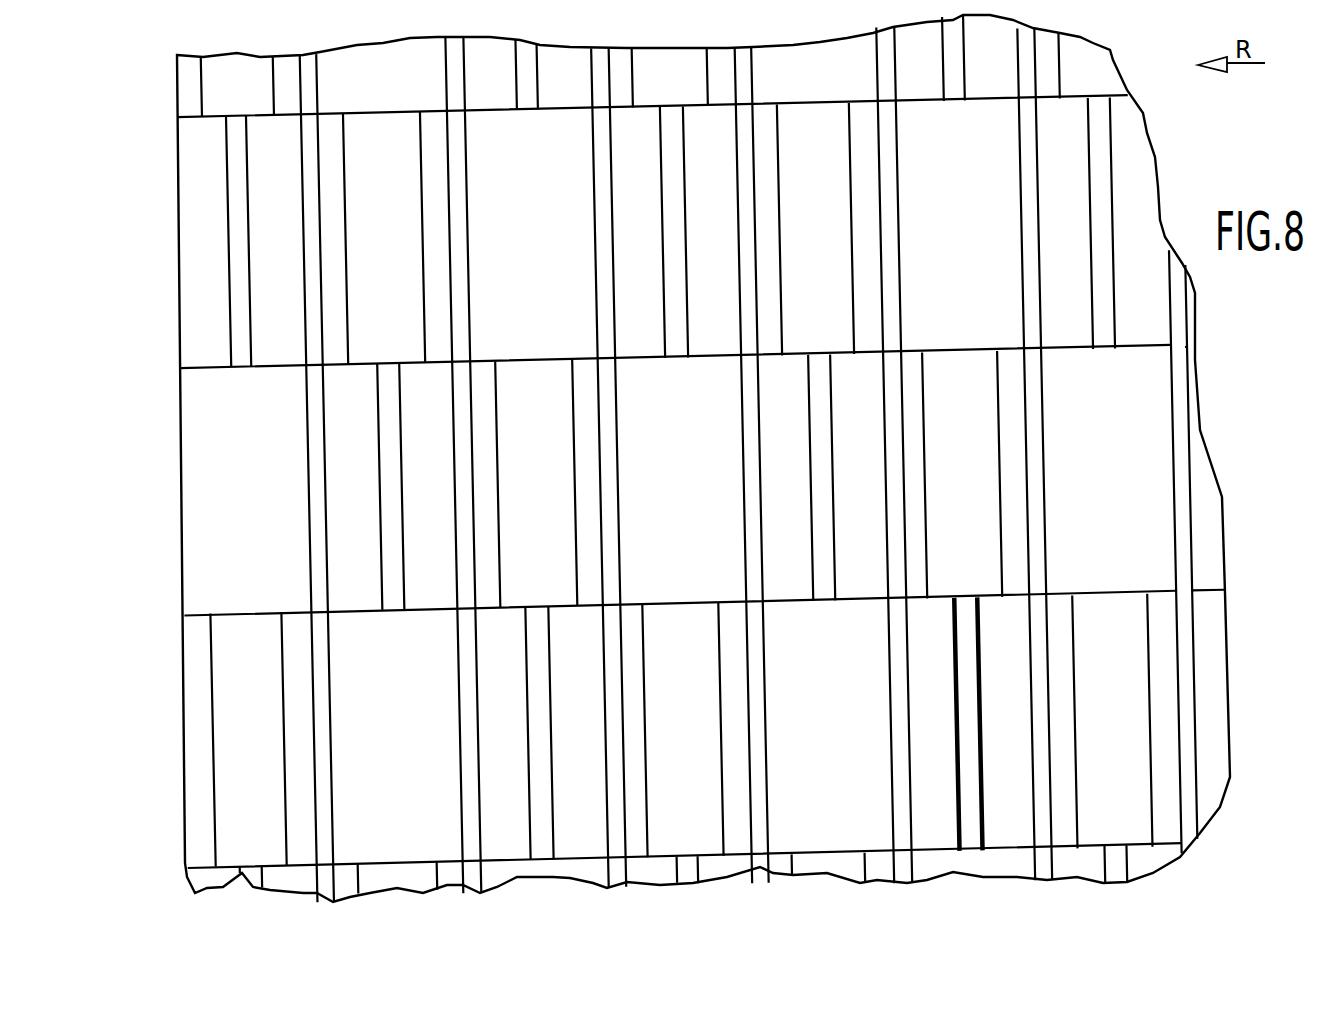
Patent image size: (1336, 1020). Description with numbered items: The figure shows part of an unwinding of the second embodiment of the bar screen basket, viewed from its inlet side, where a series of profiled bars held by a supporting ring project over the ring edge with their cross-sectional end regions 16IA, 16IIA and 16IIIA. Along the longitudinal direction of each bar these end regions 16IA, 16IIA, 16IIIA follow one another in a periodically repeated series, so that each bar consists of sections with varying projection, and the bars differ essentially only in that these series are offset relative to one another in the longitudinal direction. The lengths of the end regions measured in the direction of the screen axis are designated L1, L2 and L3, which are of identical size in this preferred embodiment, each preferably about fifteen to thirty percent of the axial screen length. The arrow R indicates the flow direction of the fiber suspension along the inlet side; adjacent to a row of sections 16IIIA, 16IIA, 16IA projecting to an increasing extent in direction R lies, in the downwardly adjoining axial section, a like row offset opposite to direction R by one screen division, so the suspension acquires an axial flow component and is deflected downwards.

The first cross-sectional end region 16IA is at (1118, 157).
The second cross-sectional end region 16IIA is at (900, 520).
The third cross-sectional end region 16IIIA is at (890, 158).
The length of first cross-sectional end region L1 is at (933, 724).
The length of second cross-sectional end region L2 is at (960, 473).
The length of third cross-sectional end region L3 is at (942, 225).